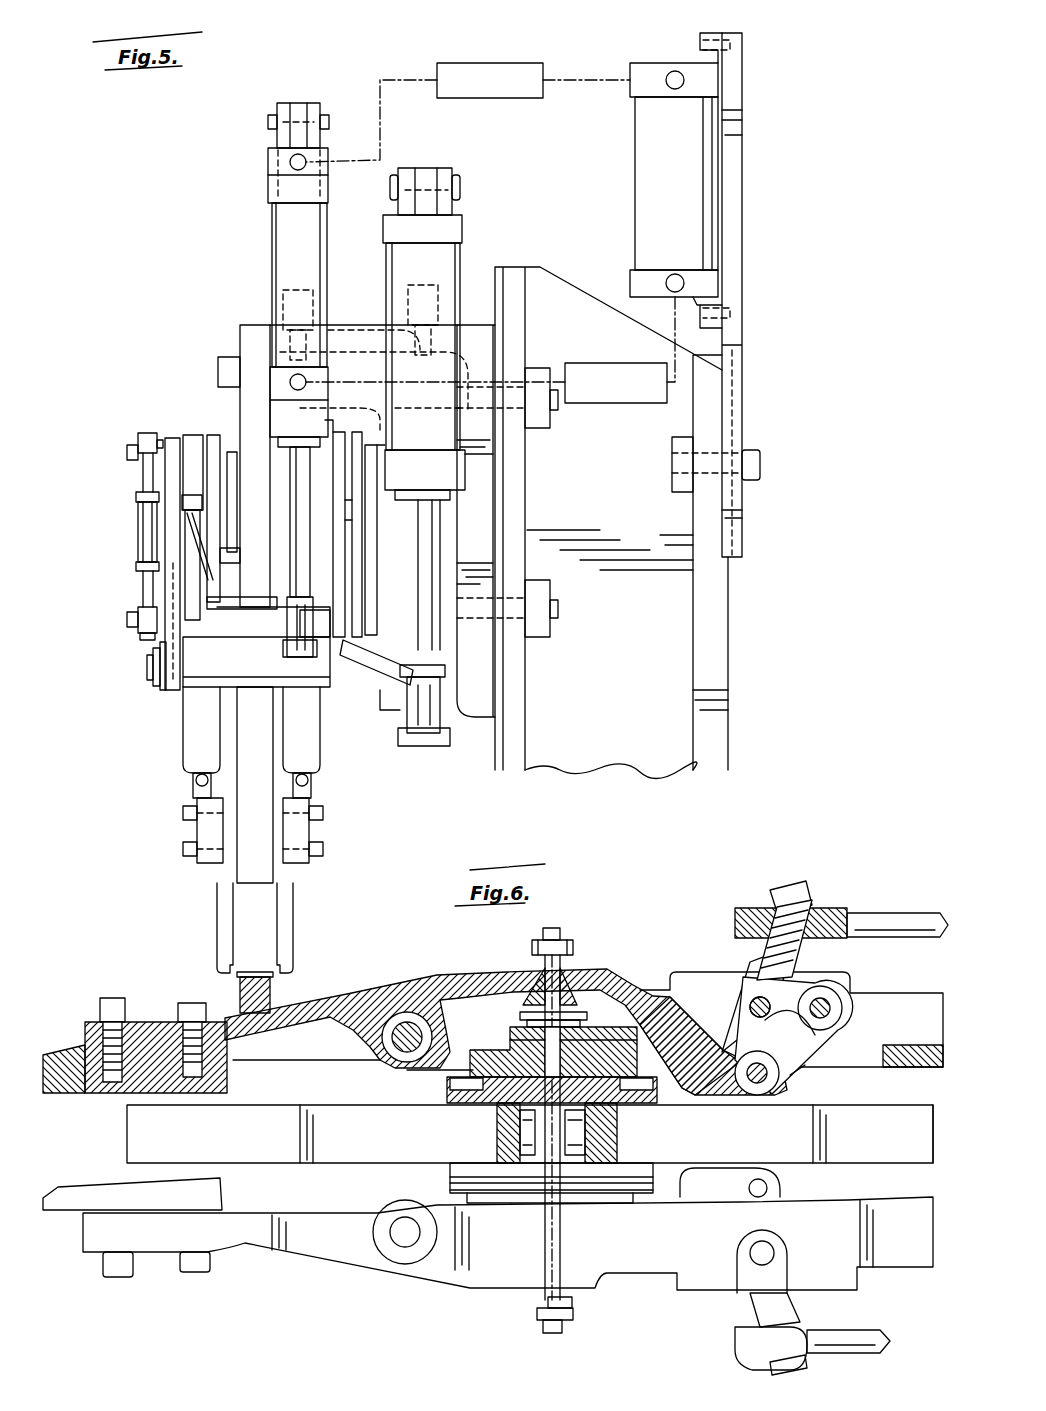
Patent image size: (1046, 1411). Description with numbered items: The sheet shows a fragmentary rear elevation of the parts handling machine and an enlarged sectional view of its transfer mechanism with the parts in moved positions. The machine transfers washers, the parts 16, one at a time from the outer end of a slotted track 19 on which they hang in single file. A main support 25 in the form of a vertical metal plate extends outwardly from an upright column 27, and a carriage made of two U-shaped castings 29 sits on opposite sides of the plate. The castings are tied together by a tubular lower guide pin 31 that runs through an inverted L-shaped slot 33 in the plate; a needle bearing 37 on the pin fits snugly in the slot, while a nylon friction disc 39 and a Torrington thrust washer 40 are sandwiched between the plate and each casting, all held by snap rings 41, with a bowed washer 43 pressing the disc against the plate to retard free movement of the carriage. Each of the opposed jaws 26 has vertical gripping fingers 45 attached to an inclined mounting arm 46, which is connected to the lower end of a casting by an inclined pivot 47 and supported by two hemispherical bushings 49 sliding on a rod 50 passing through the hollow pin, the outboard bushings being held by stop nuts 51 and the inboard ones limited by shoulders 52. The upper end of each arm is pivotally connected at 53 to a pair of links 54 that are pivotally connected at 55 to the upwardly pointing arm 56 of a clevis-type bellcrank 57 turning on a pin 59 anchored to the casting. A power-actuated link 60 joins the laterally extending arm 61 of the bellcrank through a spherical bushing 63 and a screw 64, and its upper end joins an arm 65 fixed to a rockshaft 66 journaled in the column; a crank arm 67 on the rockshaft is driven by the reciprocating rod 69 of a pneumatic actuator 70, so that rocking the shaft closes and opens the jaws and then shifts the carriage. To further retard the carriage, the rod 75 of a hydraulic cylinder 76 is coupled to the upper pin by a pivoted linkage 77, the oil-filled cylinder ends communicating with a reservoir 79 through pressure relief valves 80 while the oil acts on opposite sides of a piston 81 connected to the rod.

In FIG. 5, the part 16 is at (258, 972).
In FIG. 5, the slotted track 19 is at (273, 990).
In FIG. 5, the main support 25 is at (246, 400).
In FIG. 6, the main support 25 is at (913, 1108).
In FIG. 5, the jaws 26 is at (197, 758).
In FIG. 6, the jaws 26 is at (343, 1002).
In FIG. 5, the upright column 27 is at (568, 768).
In FIG. 6, the U-shaped castings 29 is at (857, 1015).
In FIG. 6, the lower guide pin 31 is at (572, 1042).
In FIG. 6, the slot 33 is at (506, 1165).
In FIG. 6, the needle bearing 37 is at (604, 1120).
In FIG. 6, the nylon friction disc 39 is at (480, 1102).
In FIG. 6, the Torrington thrust washer 40 is at (447, 1087).
In FIG. 6, the snap rings 41 is at (510, 1022).
In FIG. 6, the bowed washer 43 is at (510, 1036).
In FIG. 5, the gripping fingers 45 is at (216, 898).
In FIG. 6, the gripping fingers 45 is at (86, 1095).
In FIG. 5, the mounting arms 46 is at (198, 836).
In FIG. 6, the mounting arms 46 is at (292, 1062).
In FIG. 6, the pivot 47 is at (392, 1054).
In FIG. 6, the hemispherical bushings 49 is at (528, 972).
In FIG. 6, the rod 50 is at (557, 922).
In FIG. 6, the stop nuts 51 is at (570, 944).
In FIG. 6, the shoulders 52 is at (575, 1020).
In FIG. 6, the pivotal connection 53 is at (754, 1086).
In FIG. 6, the links 54 is at (800, 1050).
In FIG. 6, the pivotal connection 55 is at (846, 1002).
In FIG. 6, the arm 56 is at (795, 992).
In FIG. 6, the clevis-type bellcrank 57 is at (750, 1042).
In FIG. 6, the pin 59 is at (750, 1006).
In FIG. 5, the link 60 is at (145, 512).
In FIG. 6, the link 60 is at (914, 905).
In FIG. 6, the laterally extending arm 61 is at (752, 964).
In FIG. 6, the spherical bushing 63 is at (814, 916).
In FIG. 6, the screw 64 is at (795, 885).
In FIG. 5, the arm 65 is at (165, 575).
In FIG. 5, the rockshaft 66 is at (148, 668).
In FIG. 5, the crank arm 67 is at (384, 706).
In FIG. 5, the reciprocating rod 69 is at (432, 546).
In FIG. 5, the pneumatic actuator 70 is at (455, 272).
In FIG. 5, the rod 75 is at (296, 478).
In FIG. 5, the hydraulic cylinder 76 is at (280, 224).
In FIG. 5, the pivoted linkage 77 is at (256, 632).
In FIG. 5, the reservoir 79 is at (642, 146).
In FIG. 5, the pressure relief valves 80 is at (490, 65).
In FIG. 5, the piston 81 is at (275, 340).